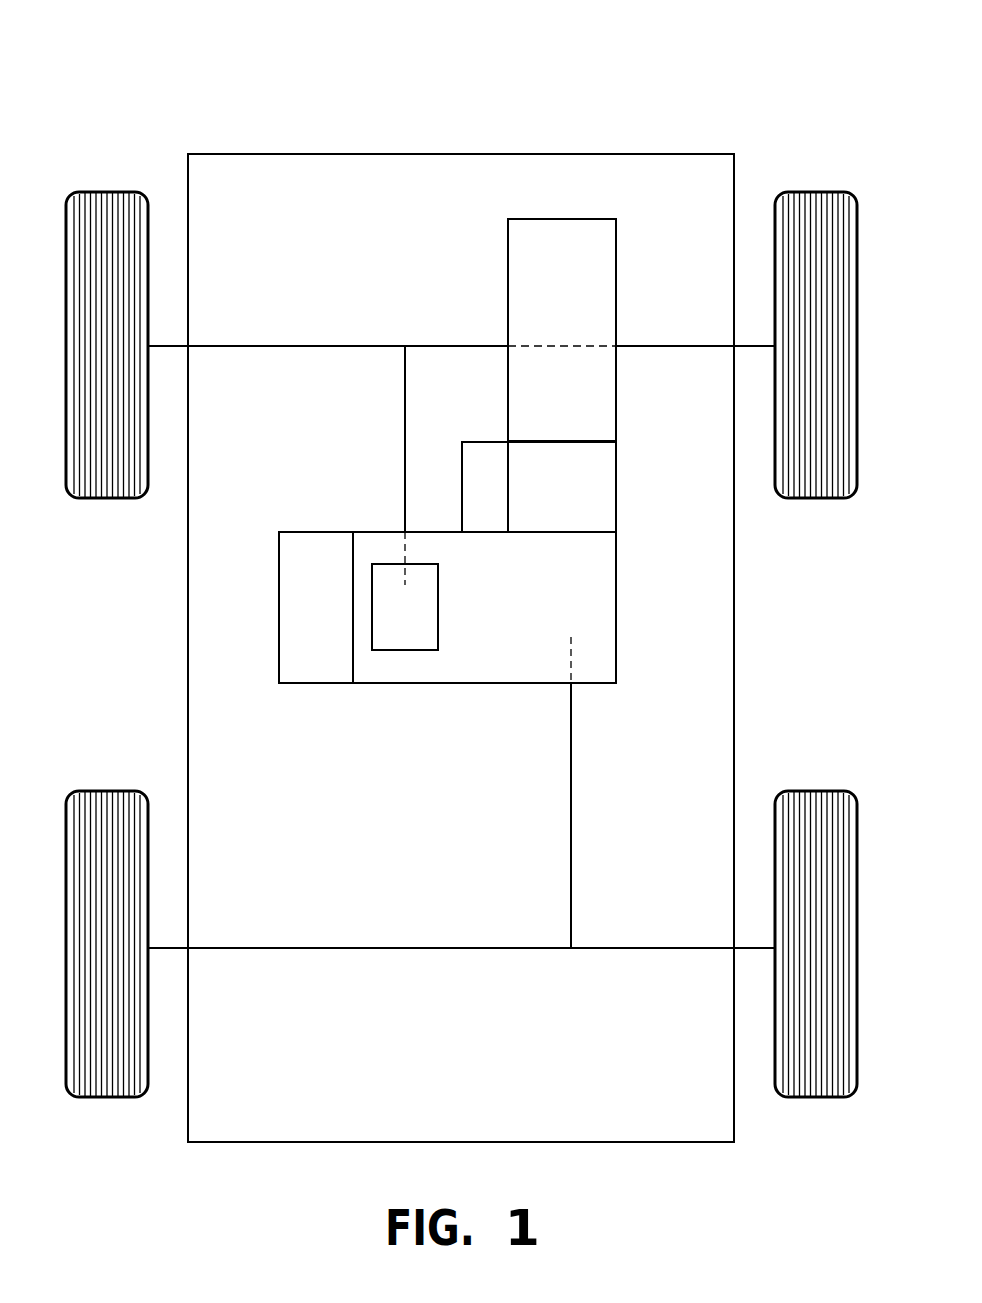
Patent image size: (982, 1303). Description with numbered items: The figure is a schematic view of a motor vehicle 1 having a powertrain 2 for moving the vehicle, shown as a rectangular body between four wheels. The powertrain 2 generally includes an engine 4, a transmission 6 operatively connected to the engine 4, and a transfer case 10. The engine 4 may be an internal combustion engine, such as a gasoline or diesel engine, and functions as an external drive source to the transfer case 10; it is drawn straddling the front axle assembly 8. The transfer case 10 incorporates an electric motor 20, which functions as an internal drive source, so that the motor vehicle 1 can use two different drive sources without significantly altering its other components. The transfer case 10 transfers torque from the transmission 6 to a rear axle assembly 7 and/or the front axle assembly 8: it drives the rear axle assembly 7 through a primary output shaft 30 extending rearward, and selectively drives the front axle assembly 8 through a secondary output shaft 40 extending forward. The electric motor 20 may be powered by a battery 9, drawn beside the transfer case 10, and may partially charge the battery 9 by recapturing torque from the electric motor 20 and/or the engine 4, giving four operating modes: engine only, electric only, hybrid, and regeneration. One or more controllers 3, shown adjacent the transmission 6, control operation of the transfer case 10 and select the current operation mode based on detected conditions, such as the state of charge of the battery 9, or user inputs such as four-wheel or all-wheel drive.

The motor vehicle 1 is at (212, 98).
The powertrain 2 is at (290, 240).
The controllers 3 is at (485, 487).
The engine 4 is at (562, 330).
The transmission 6 is at (562, 487).
The rear axle assembly 7 is at (598, 947).
The front axle assembly 8 is at (634, 346).
The battery 9 is at (316, 607).
The transfer case 10 is at (484, 607).
The electric motor 20 is at (405, 607).
The primary output shaft 30 is at (572, 725).
The secondary output shaft 40 is at (405, 455).